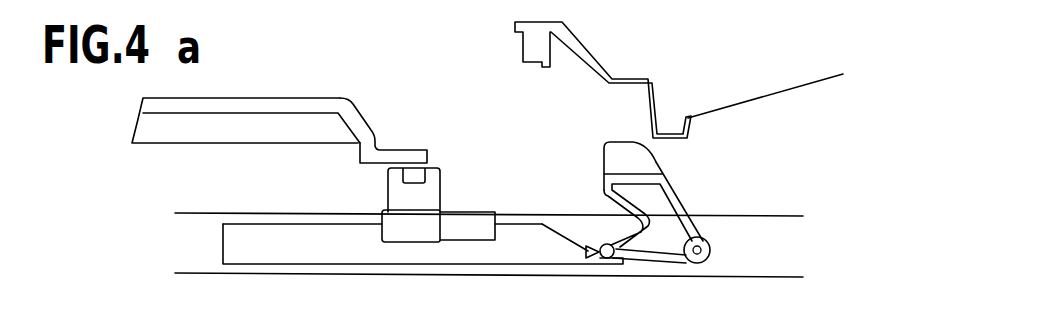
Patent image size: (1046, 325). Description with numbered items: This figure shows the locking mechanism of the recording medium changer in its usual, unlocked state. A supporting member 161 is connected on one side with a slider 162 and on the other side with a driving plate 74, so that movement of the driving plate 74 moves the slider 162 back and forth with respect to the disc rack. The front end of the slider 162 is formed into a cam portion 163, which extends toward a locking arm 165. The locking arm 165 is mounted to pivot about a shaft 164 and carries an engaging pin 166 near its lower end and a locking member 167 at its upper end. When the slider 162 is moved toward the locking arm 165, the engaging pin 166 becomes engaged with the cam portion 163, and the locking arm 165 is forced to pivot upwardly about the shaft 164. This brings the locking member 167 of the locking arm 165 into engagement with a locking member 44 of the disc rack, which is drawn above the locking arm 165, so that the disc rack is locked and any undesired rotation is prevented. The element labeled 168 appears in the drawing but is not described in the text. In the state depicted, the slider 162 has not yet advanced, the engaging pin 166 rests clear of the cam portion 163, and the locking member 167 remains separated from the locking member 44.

The driving plate 74 is at (401, 152).
The supporting member 161 is at (432, 187).
The slider 162 is at (353, 250).
The cam portion 163 is at (568, 237).
The shaft 164 is at (702, 250).
The locking arm 165 is at (665, 212).
The engaging pin 166 is at (617, 262).
The locking member 167 is at (640, 162).
The plate 168 is at (272, 223).
The locking member 44 is at (667, 118).